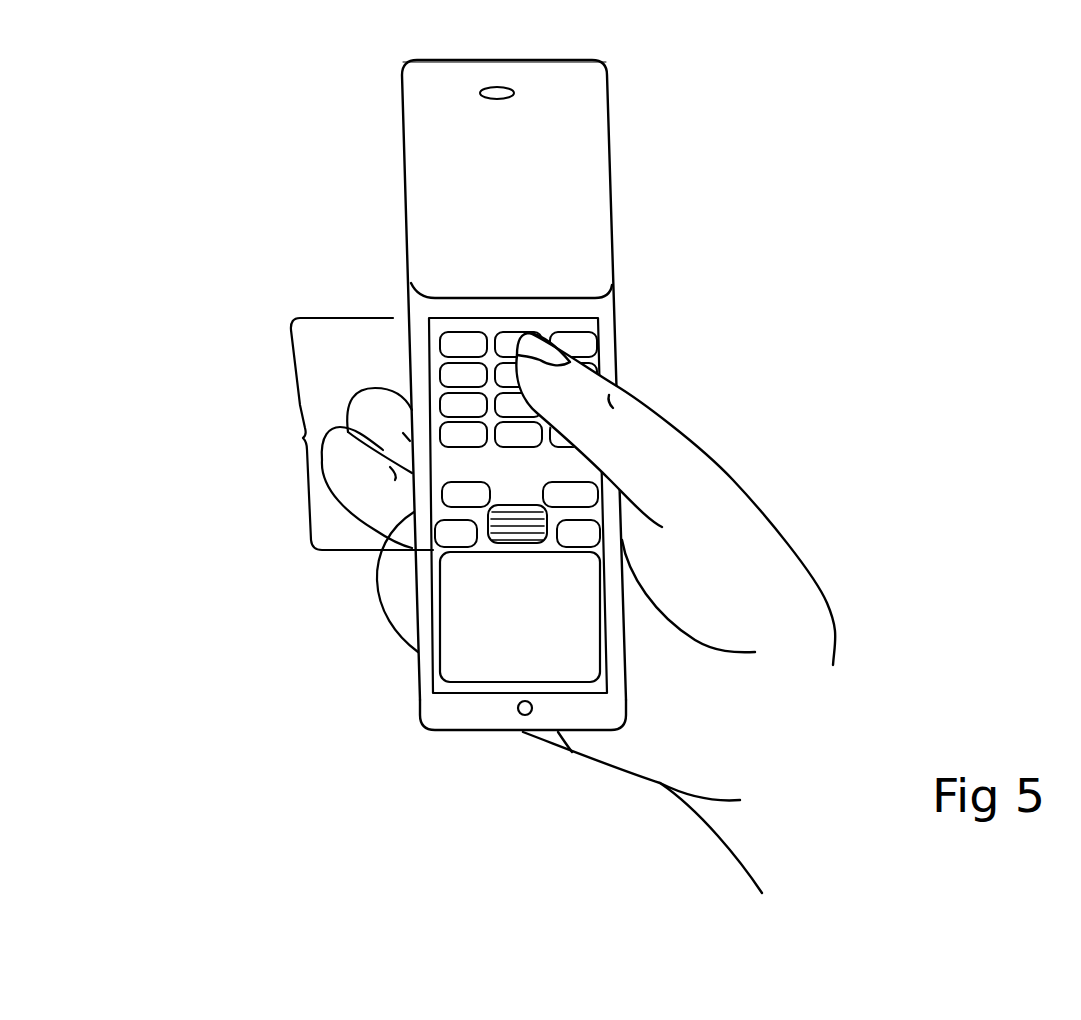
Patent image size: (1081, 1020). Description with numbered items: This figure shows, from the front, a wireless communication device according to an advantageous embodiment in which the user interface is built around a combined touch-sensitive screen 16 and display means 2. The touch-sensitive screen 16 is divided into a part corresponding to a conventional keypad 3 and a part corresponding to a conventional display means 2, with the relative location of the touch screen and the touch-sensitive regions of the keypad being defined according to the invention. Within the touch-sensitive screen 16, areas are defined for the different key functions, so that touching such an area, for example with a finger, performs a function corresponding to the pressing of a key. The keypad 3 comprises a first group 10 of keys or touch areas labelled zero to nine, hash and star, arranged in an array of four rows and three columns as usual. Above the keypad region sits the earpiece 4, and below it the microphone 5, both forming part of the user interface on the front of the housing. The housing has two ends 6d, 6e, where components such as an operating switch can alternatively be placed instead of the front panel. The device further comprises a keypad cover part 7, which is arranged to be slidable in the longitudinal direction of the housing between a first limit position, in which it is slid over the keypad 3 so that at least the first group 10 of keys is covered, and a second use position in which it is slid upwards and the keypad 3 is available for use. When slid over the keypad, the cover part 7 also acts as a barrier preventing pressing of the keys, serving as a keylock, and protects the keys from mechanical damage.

The display means 2 is at (450, 663).
The keypad 3 is at (297, 440).
The earpiece 4 is at (480, 93).
The microphone 5 is at (525, 715).
The end of the housing 6d is at (448, 739).
The end of the housing 6e is at (622, 265).
The keypad cover part 7 is at (613, 213).
The first group of keys 10 is at (436, 420).
The touch-sensitive screen 16 is at (598, 325).